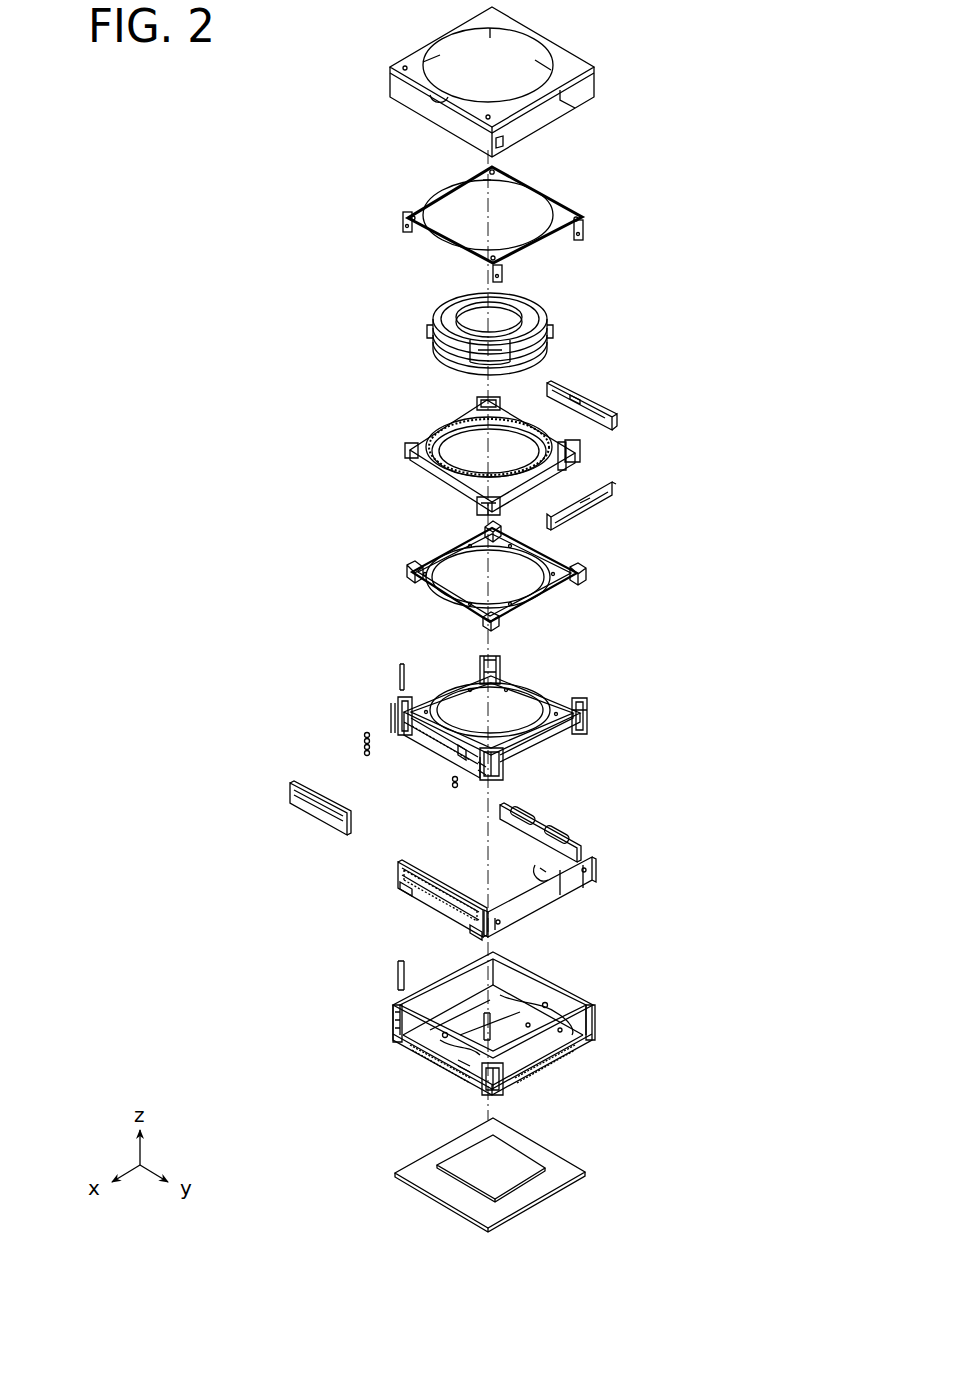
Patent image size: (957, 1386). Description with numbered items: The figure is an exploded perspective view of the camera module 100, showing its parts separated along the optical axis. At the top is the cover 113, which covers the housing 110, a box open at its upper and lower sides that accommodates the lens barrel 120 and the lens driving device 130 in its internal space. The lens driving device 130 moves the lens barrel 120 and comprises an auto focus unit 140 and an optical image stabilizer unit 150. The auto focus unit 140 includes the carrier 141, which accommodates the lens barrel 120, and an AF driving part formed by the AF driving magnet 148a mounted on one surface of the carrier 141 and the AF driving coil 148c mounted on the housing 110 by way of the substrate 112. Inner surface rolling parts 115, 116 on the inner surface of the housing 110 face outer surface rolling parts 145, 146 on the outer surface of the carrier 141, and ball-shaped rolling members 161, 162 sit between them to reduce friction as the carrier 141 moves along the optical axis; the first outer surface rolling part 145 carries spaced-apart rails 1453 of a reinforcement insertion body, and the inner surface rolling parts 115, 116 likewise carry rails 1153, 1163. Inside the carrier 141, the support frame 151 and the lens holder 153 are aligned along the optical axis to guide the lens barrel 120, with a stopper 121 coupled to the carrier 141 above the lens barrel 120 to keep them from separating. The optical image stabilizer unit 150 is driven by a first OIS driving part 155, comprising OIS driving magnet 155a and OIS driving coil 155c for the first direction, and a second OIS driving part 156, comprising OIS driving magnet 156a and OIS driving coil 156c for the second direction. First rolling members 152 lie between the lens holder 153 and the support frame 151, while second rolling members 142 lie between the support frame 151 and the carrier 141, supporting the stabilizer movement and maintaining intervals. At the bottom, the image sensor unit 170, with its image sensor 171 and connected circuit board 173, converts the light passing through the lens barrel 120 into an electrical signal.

The camera module 100 is at (630, 40).
The housing 110 is at (595, 1000).
The substrate 112 is at (527, 912).
The cover 113 is at (395, 86).
The inner surface rolling part 115 is at (393, 1012).
The inner surface rolling part 116 is at (465, 1064).
The rails 1153 is at (398, 975).
The rails 1163 is at (520, 1050).
The lens barrel 120 is at (450, 314).
The stopper 121 is at (420, 206).
The lens driving device 130 is at (210, 460).
The auto focus (AF) unit 140 is at (305, 648).
The carrier 141 is at (548, 706).
The second rolling members 142 is at (500, 672).
The rails 1453 is at (400, 675).
The first outer surface rolling part 145 is at (398, 714).
The second outer surface rolling part 146 is at (486, 773).
The AF driving magnet 148a is at (292, 790).
The AF driving coil 148c is at (400, 878).
The optical image stabilizer (OIS) unit 150 is at (305, 462).
The support frame 151 is at (420, 590).
The first rolling members 152 is at (412, 565).
The lens holder 153 is at (430, 440).
The first OIS driving part 155 is at (790, 256).
The OIS driving magnet 155a is at (617, 490).
The OIS driving coil 155c is at (532, 892).
The second OIS driving part 156 is at (790, 335).
The OIS driving magnet 156a is at (615, 408).
The OIS driving coil 156c is at (548, 842).
The rolling members 161 is at (363, 733).
The rolling members 162 is at (447, 776).
The image sensor unit 170 is at (360, 1175).
The image sensor 171 is at (480, 1183).
The circuit board 173 is at (560, 1160).